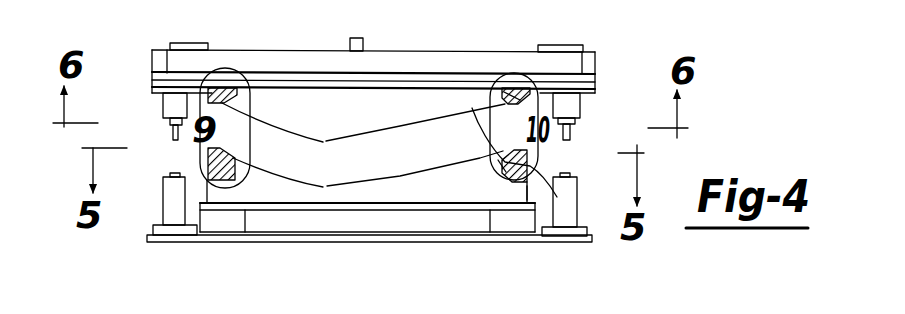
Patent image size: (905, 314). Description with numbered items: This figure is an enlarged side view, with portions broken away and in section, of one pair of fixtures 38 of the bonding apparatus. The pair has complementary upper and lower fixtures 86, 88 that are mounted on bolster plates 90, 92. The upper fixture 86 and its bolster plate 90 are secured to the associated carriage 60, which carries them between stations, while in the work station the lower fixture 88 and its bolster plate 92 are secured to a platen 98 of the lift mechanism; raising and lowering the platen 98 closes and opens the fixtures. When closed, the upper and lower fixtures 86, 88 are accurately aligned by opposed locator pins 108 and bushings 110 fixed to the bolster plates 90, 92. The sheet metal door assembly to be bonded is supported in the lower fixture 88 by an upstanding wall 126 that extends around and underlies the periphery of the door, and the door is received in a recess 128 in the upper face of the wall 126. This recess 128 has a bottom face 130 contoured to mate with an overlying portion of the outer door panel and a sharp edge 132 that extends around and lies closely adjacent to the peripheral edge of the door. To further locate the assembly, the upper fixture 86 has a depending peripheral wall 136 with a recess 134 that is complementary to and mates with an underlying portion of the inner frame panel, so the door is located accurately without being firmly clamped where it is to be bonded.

The pair of fixtures 38 is at (557, 162).
The carriage 60 is at (159, 63).
The upper fixture 86 is at (387, 137).
The lower fixture 88 is at (342, 184).
The bolster plate 90 is at (152, 88).
The bolster plate 92 is at (318, 206).
The platen 98 is at (218, 242).
The locator pins 108 is at (172, 135).
The bushings 110 is at (170, 202).
The upstanding wall 126 is at (577, 195).
The recess 128 is at (503, 153).
The bottom face 130 is at (490, 155).
The sharp edge 132 is at (508, 104).
The recess 134 is at (472, 108).
The depending peripheral wall 136 is at (536, 84).